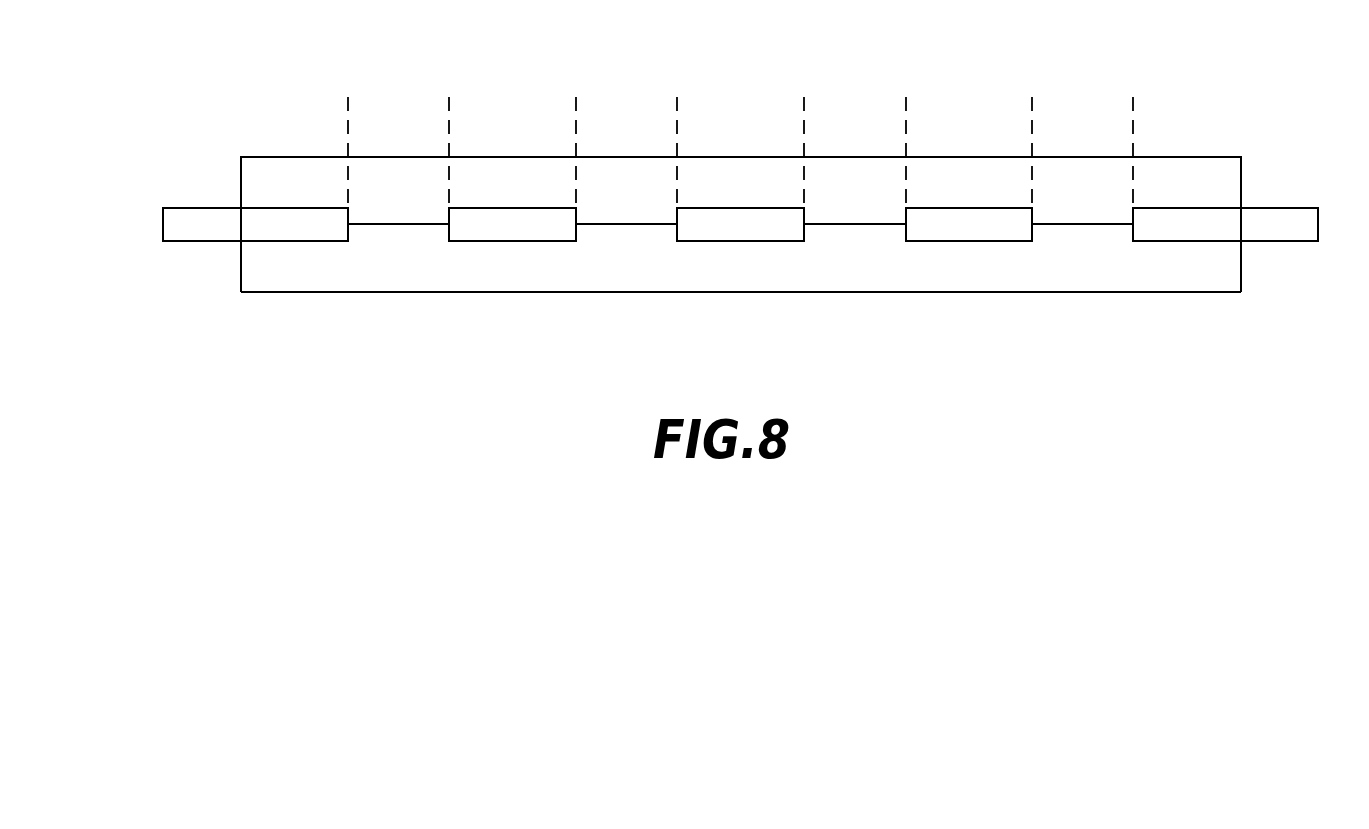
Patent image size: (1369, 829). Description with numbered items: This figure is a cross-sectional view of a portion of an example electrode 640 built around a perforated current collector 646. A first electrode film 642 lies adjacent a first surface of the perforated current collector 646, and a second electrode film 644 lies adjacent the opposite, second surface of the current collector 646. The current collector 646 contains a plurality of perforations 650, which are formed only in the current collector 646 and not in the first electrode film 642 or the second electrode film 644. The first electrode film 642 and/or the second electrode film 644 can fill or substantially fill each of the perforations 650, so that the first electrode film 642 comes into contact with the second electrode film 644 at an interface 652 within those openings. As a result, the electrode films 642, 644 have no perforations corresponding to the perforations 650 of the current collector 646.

The electrode 640 is at (148, 165).
The first electrode film 642 is at (1228, 181).
The second electrode film 644 is at (250, 281).
The perforated current collector 646 is at (175, 228).
The perforations 650 is at (449, 97).
The interface 652 is at (380, 228).